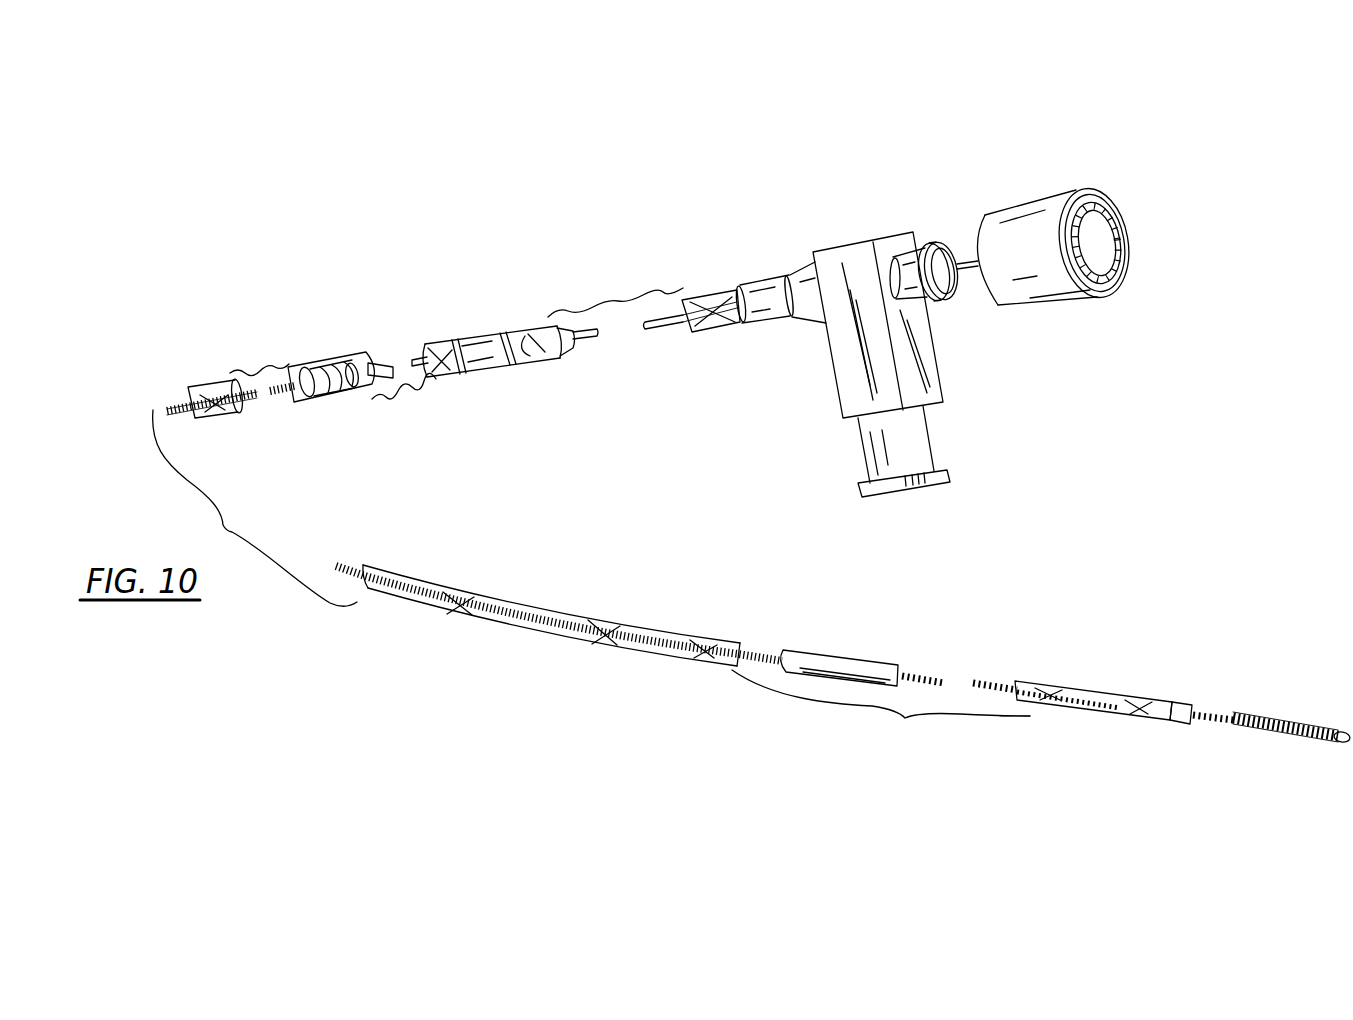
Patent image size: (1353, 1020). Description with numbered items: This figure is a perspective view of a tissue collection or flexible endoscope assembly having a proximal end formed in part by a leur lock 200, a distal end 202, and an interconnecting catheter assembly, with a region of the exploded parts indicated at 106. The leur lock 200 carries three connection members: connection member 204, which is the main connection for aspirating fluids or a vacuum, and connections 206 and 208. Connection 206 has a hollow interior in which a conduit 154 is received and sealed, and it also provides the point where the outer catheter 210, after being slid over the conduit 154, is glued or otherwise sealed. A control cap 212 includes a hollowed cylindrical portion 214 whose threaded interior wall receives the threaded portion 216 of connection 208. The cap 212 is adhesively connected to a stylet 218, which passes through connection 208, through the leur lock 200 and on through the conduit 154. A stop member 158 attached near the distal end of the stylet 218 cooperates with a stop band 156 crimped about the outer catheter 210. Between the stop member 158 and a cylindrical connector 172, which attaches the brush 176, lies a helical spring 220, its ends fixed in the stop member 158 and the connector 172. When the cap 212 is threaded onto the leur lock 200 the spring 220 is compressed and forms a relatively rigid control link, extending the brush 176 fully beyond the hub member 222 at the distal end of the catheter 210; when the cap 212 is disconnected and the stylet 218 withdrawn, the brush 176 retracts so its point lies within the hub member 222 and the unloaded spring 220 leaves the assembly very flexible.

The drive cable assembly 106 is at (405, 290).
The conduit 154 is at (670, 325).
The stop band 156 is at (470, 370).
The stop member 158 is at (322, 390).
The cylindrical connector 172 is at (820, 655).
The brush 176 is at (1292, 696).
The leur lock 200 is at (868, 194).
The distal end 202 is at (1086, 752).
The connection member 204 is at (920, 440).
The connection 206 is at (805, 275).
The connection 208 is at (933, 215).
The outer catheter 210 is at (700, 300).
The control cap 212 is at (1045, 188).
The hollowed cylindrical portion 214 is at (1058, 283).
The threaded portion 216 is at (940, 305).
The stylet 218 is at (968, 276).
The helical spring 220 is at (160, 402).
The hub member 222 is at (1178, 723).